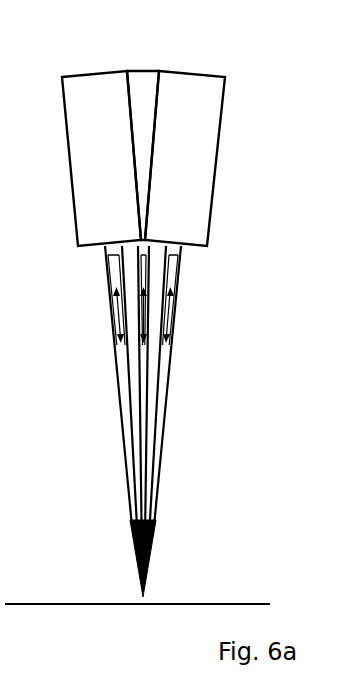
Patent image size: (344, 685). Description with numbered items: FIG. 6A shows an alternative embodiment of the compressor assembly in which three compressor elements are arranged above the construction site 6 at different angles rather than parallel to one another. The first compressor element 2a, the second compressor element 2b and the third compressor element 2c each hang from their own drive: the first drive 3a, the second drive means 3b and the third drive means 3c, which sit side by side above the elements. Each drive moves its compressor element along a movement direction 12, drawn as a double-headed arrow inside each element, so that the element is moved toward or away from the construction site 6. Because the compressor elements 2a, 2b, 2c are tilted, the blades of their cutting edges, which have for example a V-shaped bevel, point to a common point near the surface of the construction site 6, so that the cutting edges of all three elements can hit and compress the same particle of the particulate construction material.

The first drive 3a is at (105, 100).
The second drive means 3b is at (142, 90).
The third drive means 3c is at (190, 97).
The first compressor element 2a is at (127, 427).
The second compressor element 2b is at (140, 397).
The third compressor element 2c is at (163, 383).
The movement direction 12 is at (118, 292).
The construction site 6 is at (228, 603).